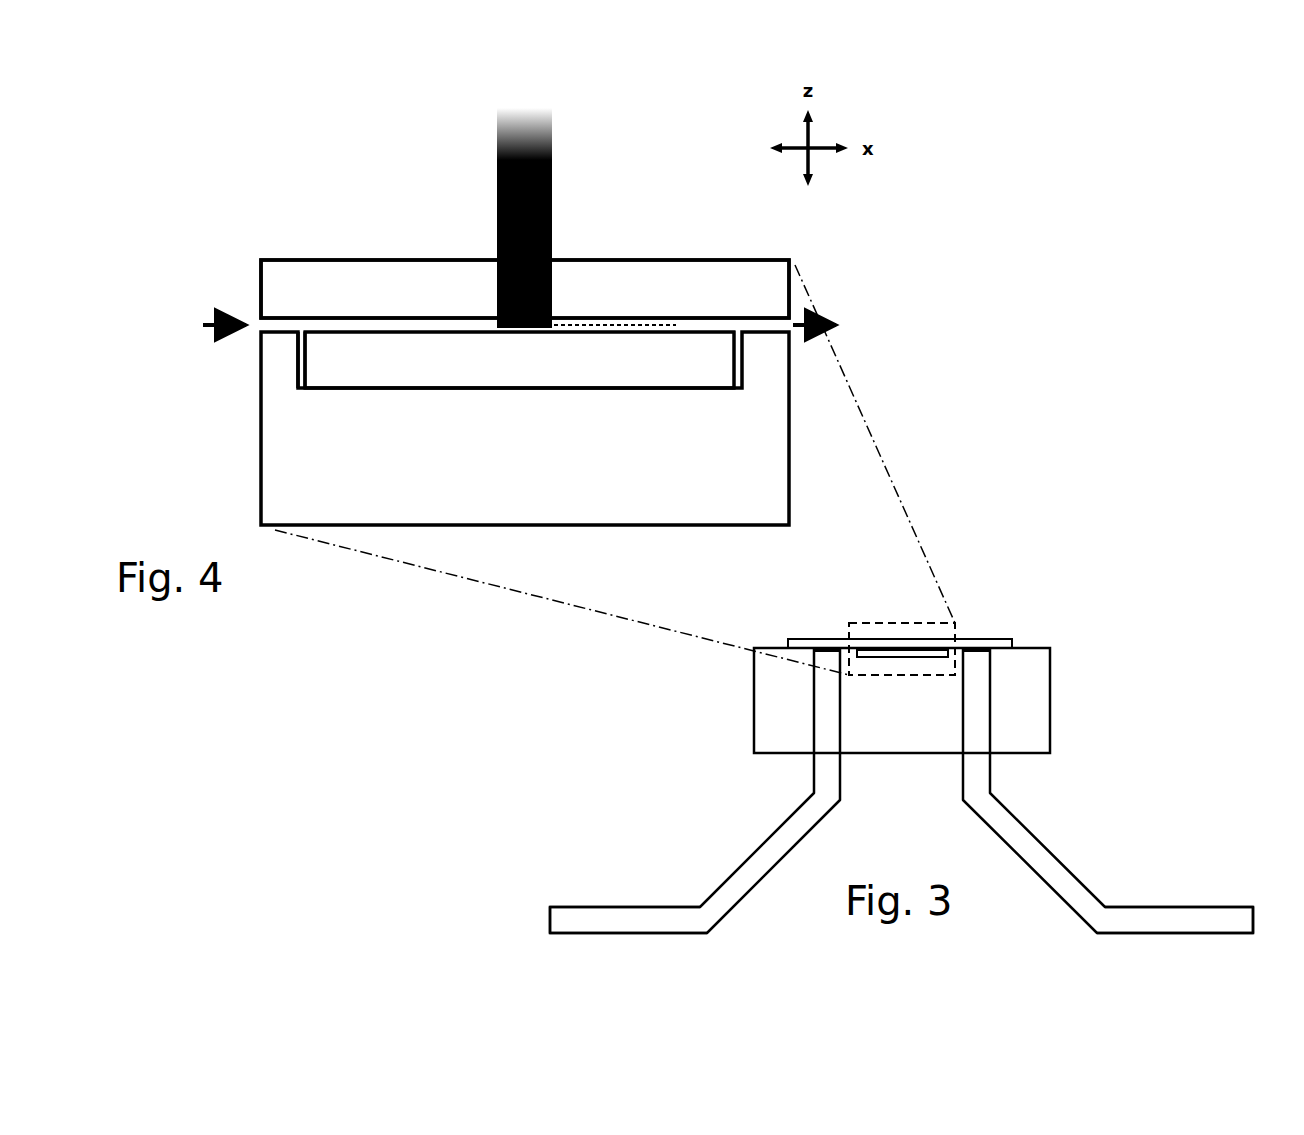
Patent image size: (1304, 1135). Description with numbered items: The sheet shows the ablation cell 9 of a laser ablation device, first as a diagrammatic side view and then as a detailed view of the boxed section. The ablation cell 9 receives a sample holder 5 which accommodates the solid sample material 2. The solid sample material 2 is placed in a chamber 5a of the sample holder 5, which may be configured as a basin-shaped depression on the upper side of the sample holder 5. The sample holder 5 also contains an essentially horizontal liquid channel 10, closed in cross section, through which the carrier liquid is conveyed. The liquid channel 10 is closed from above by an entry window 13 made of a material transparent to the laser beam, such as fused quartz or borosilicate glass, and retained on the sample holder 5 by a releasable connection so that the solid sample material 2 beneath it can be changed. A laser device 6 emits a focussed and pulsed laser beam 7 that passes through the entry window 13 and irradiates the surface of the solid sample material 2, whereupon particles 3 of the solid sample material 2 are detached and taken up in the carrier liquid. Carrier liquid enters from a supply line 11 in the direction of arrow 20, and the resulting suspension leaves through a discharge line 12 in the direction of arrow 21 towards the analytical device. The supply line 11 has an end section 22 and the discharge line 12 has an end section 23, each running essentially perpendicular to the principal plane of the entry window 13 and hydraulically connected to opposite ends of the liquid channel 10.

In FIG. 4, the solid sample material 2 is at (445, 360).
In FIG. 4, the particles 3 is at (638, 322).
In FIG. 4, the sample holder 5 is at (670, 452).
In FIG. 4, the chamber 5a is at (300, 372).
In FIG. 4, the laser device 6 is at (482, 100).
In FIG. 4, the laser beam 7 is at (508, 200).
In FIG. 4, the ablation cell 9 is at (249, 244).
In FIG. 3, the ablation cell 9 is at (1060, 632).
In FIG. 4, the liquid channel 10 is at (356, 325).
In FIG. 3, the supply line 11 is at (600, 898).
In FIG. 3, the discharge line 12 is at (1180, 896).
In FIG. 4, the entry window 13 is at (762, 275).
In FIG. 3, the entry window 13 is at (818, 642).
In FIG. 4, the arrow 20 is at (225, 338).
In FIG. 4, the arrow 21 is at (825, 312).
In FIG. 3, the end section 22 is at (815, 700).
In FIG. 3, the end section 23 is at (990, 706).